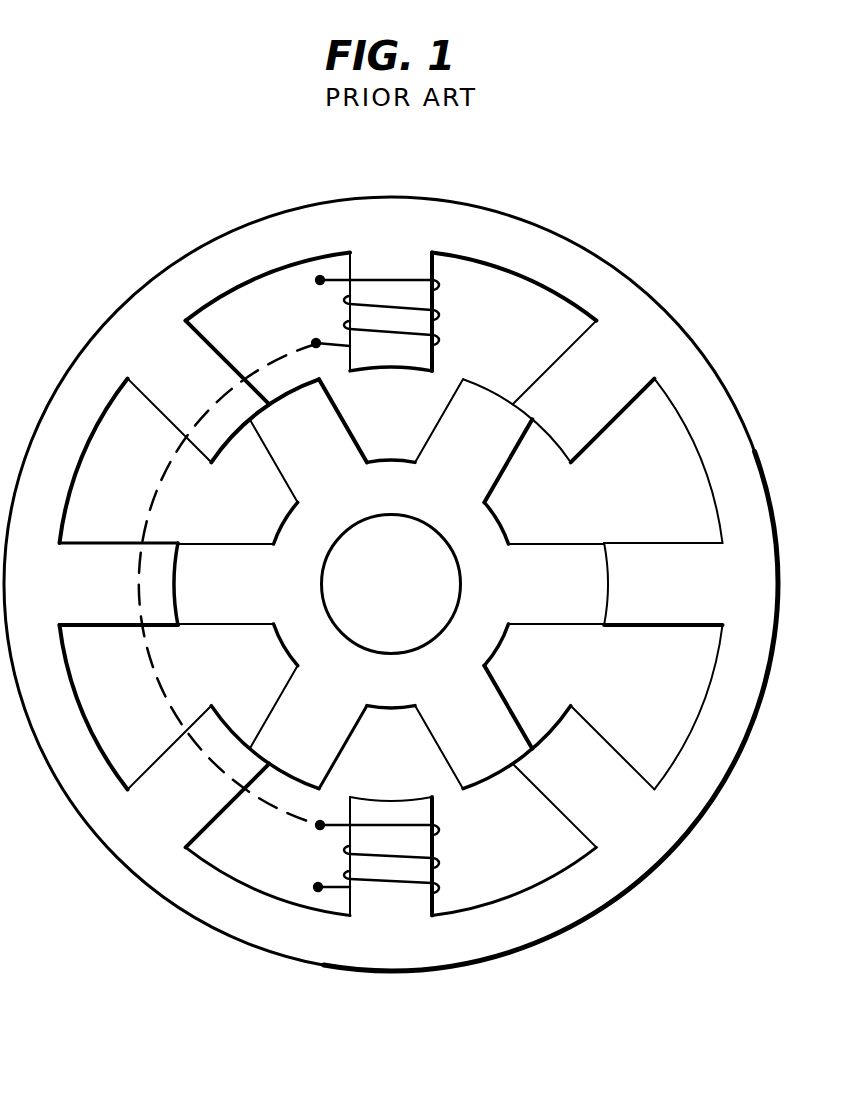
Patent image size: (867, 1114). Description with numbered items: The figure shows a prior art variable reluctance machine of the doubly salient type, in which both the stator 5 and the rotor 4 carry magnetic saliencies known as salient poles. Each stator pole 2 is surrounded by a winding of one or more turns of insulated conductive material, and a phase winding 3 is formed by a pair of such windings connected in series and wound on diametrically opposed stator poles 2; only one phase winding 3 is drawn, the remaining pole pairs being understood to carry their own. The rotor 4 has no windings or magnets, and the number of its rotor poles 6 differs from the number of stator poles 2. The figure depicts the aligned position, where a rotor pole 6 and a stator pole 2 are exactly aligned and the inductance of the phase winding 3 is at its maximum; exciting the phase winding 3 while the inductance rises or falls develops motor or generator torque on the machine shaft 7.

The stator pole 2 is at (615, 422).
The phase winding 3 is at (128, 650).
The rotor 4 is at (278, 508).
The stator 5 is at (114, 298).
The rotor pole 6 is at (270, 713).
The machine shaft 7 is at (407, 594).